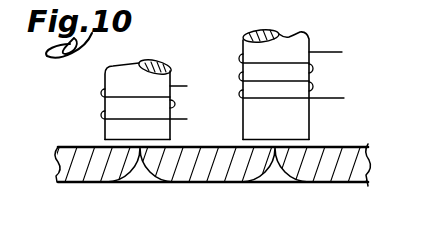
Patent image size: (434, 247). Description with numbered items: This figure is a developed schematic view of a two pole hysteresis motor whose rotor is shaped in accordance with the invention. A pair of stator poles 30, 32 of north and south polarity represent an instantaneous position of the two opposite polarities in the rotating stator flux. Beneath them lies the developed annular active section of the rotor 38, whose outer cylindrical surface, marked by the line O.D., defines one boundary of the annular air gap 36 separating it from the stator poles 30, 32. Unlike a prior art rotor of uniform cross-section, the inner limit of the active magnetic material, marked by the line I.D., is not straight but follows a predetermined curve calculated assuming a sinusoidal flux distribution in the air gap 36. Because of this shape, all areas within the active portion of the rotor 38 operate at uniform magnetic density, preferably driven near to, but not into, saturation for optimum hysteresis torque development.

The stator pole 30 is at (165, 82).
The stator pole 32 is at (298, 45).
The air gap 36 is at (176, 144).
The rotor 38 is at (318, 172).